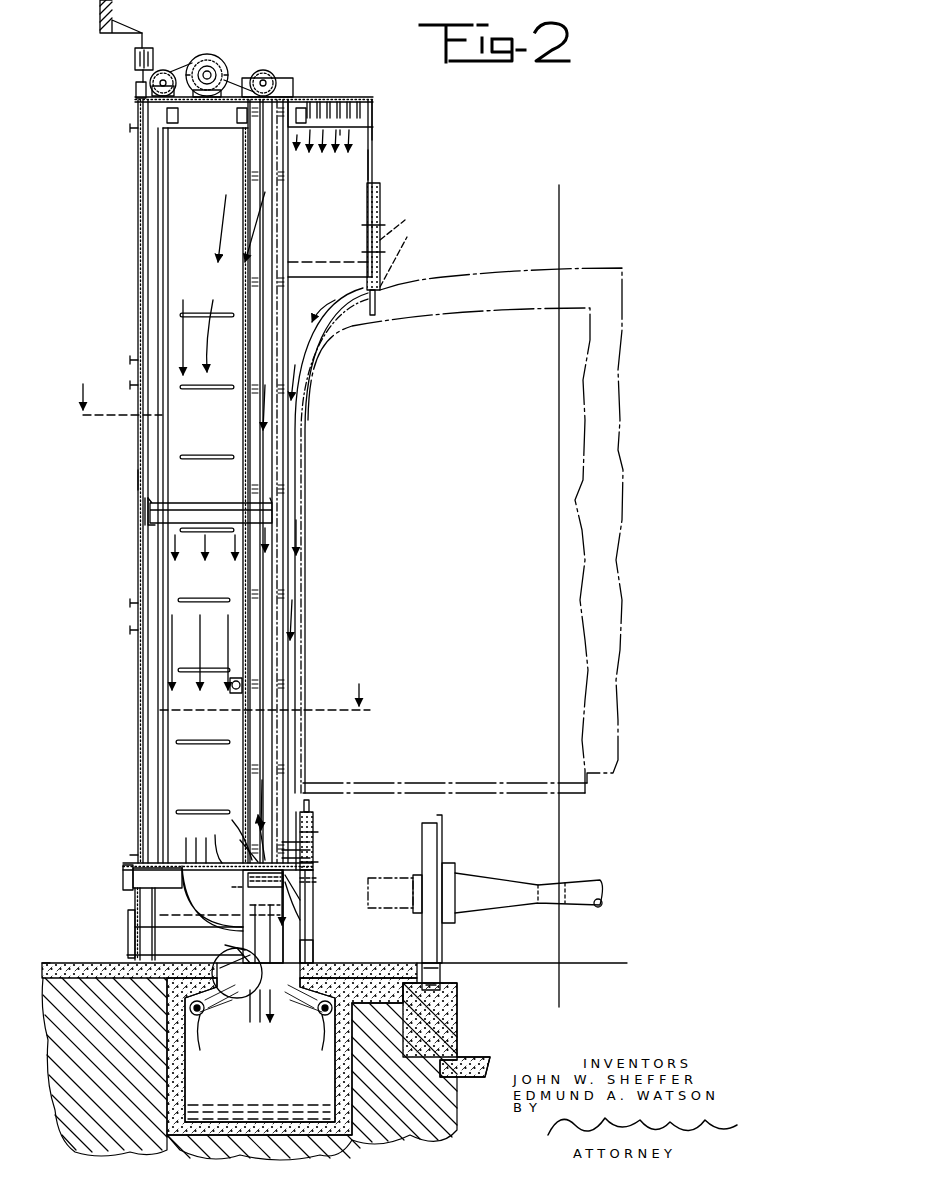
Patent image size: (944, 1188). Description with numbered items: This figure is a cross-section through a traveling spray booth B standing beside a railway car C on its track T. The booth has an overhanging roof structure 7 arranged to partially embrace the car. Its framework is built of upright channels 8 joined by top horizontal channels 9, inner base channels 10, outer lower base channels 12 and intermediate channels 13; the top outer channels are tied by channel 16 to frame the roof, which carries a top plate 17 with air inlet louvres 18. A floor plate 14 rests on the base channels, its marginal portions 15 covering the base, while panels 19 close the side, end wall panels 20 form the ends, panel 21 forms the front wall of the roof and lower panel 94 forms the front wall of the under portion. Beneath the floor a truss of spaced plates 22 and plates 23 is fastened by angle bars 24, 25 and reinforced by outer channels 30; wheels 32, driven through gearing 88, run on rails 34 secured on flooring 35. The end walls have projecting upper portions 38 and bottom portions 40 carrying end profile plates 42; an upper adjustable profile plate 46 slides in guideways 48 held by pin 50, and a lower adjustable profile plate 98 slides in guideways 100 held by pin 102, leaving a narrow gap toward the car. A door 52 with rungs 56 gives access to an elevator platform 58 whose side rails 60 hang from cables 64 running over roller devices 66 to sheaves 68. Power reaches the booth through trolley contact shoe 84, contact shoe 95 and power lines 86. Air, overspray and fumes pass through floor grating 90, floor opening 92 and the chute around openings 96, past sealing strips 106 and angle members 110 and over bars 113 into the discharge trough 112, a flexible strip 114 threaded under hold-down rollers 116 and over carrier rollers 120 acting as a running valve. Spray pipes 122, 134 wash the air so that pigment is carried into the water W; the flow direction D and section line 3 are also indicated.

The overhanging roof structure 7 is at (358, 176).
The upright channels 8 is at (158, 152).
The top inner and outer horizontal channels 9 is at (138, 115).
The inner base channels 10 is at (123, 887).
The outer lower base channels 12 is at (201, 920).
The intermediate channels 13 is at (136, 358).
The floor plate 14 is at (165, 860).
The marginal portions of the floor plate 15 is at (130, 858).
The channel 16 is at (350, 150).
The top plate 17 is at (373, 100).
The air inlet louvres 18 is at (345, 100).
The panels 19 is at (138, 258).
The end wall panels 20 is at (160, 785).
The front wall panel 21 is at (372, 137).
The spaced longitudinally extending plates 22 is at (133, 910).
The plates 23 is at (263, 916).
The angle bars 24 is at (123, 871).
The angle bars 25 is at (248, 878).
The outer channels 30 is at (128, 930).
The wheels 32 is at (313, 932).
The rails 34 is at (138, 963).
The flooring 35 is at (75, 963).
The forwardly projecting upper end portions 38 is at (330, 188).
The forwardly projecting bottom end portions 40 is at (316, 832).
The end profile plates 42 is at (286, 758).
The upper adjustable profile plate 46 is at (378, 286).
The guideways 48 is at (380, 186).
The pin 50 is at (383, 228).
The outwardly swinging door 52 is at (205, 432).
The rungs 56 is at (218, 244).
The elevator platform 58 is at (182, 503).
The side rails 60 is at (145, 525).
The cables 64 is at (155, 300).
The roller devices 66 is at (168, 71).
The sheaves 68 is at (216, 60).
The trolley contact shoe 84 is at (136, 89).
The power lines 86 is at (135, 59).
The gearing 88 is at (316, 950).
The grating 90 is at (216, 840).
The narrow opening 92 is at (295, 851).
The lower front wall panel 94 is at (236, 898).
The contact shoe 95 is at (146, 55).
The openings 96 is at (265, 934).
The lower adjustable profile plate 98 is at (310, 808).
The guideways 100 is at (316, 862).
The pin 102 is at (318, 838).
The flexible sealing strips 106 is at (220, 943).
The angle members 110 is at (237, 973).
The discharge trough 112 is at (328, 1056).
The bars 113 is at (261, 998).
The flexible strip 114 is at (248, 825).
The hold-down rollers 116 is at (235, 949).
The carrier rollers 120 is at (258, 866).
The spray pipes 122 is at (264, 1038).
The spray pipes 134 is at (205, 1013).
The section line 3 is at (222, 538).
The spray booth B is at (135, 479).
The railway car C is at (446, 276).
The path D is at (507, 316).
The track T is at (442, 978).
The water W is at (233, 1105).